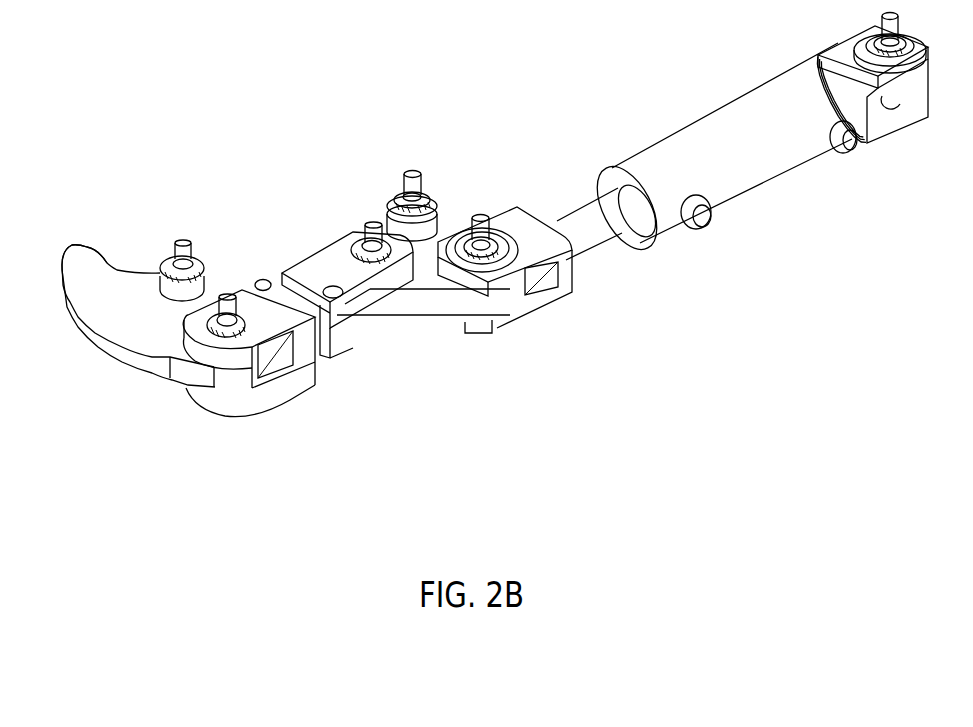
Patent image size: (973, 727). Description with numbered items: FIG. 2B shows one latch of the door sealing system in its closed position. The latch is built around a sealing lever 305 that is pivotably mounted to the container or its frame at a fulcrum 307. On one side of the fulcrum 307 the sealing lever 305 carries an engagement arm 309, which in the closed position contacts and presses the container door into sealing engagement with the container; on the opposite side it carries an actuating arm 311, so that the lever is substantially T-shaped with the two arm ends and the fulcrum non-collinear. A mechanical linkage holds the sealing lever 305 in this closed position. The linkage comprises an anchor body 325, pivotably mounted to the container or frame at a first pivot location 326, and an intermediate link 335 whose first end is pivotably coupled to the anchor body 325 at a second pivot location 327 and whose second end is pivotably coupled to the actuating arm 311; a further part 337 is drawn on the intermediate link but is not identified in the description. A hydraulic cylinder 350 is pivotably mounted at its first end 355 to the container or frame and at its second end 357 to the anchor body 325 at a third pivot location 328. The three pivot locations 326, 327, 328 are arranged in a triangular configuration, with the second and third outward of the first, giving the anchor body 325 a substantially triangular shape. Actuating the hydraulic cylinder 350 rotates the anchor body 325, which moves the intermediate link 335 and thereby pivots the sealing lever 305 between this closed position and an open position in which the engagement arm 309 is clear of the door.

The sealing lever 305 is at (103, 335).
The fulcrum 307 is at (185, 256).
The engagement arm 309 is at (84, 272).
The actuating arm 311 is at (228, 372).
The anchor body 325 is at (442, 232).
The first pivot location 326 is at (417, 193).
The second pivot location 327 is at (380, 233).
The third pivot location 328 is at (483, 230).
The intermediate link 335 is at (342, 335).
The link cap block 337 is at (392, 260).
The hydraulic cylinder 350 is at (768, 160).
The first end 355 is at (905, 123).
The second end 357 is at (535, 297).